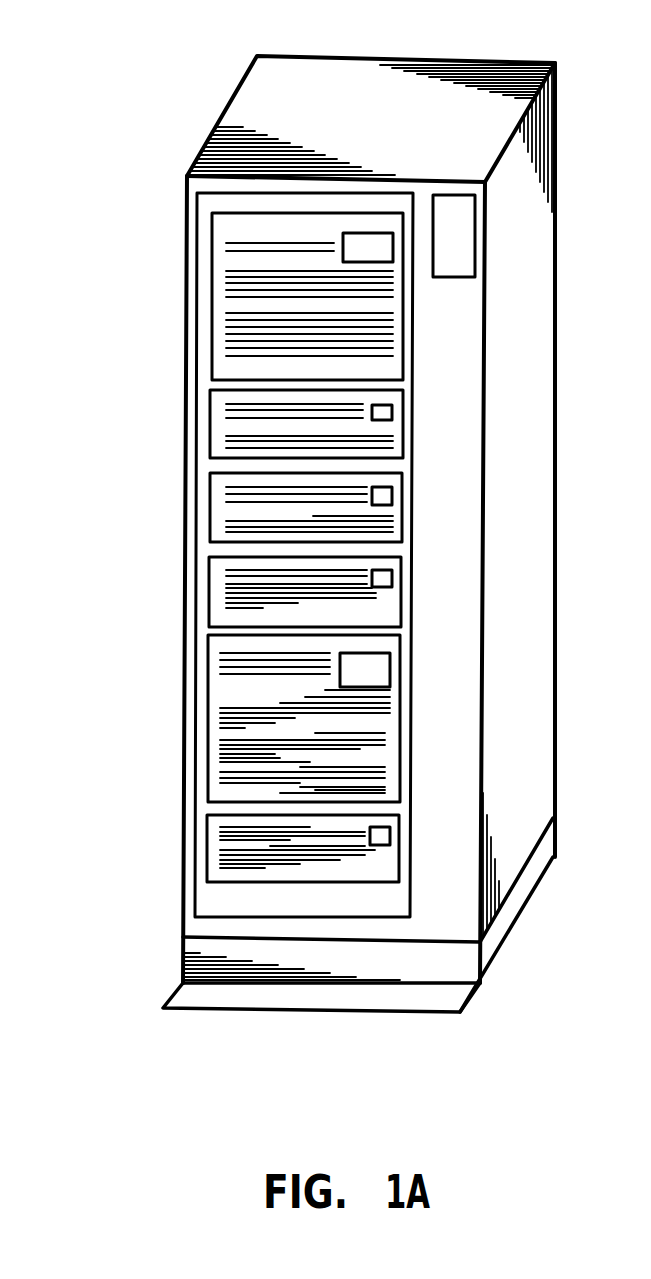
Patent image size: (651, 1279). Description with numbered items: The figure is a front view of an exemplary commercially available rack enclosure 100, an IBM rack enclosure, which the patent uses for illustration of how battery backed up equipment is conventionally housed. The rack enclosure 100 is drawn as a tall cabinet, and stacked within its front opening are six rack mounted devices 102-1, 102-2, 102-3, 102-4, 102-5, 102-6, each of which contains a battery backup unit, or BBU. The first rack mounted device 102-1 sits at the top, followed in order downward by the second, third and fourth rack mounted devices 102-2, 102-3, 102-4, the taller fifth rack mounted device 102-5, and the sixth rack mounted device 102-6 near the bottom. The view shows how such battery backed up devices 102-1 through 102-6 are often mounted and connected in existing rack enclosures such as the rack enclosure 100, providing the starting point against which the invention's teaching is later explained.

The rack enclosure 100 is at (342, 1005).
The rack mounted device 102-1 is at (212, 252).
The rack mounted device 102-2 is at (210, 422).
The rack mounted device 102-3 is at (210, 504).
The rack mounted device 102-4 is at (209, 588).
The rack mounted device 102-5 is at (208, 722).
The rack mounted device 102-6 is at (207, 832).